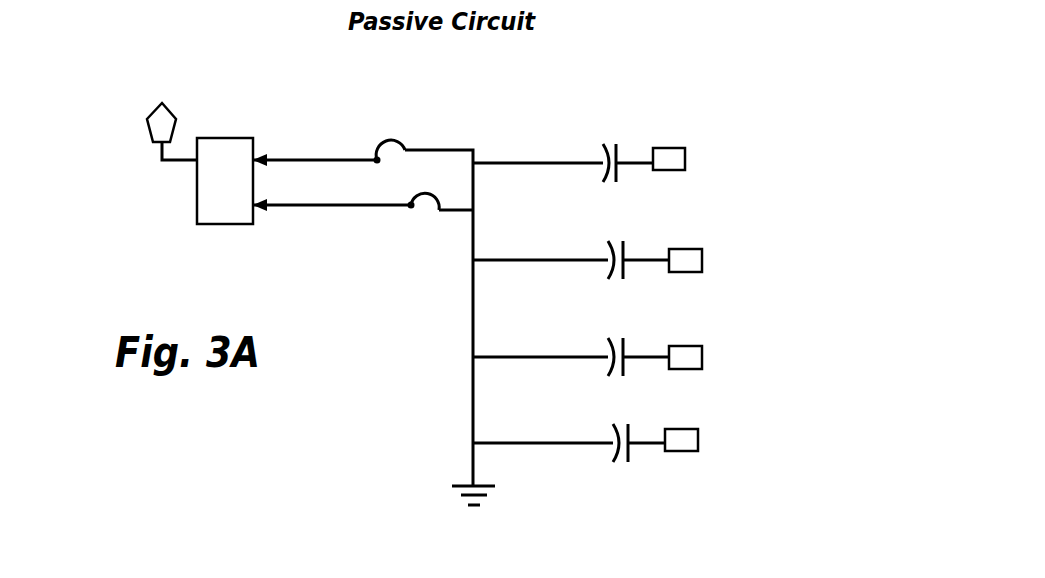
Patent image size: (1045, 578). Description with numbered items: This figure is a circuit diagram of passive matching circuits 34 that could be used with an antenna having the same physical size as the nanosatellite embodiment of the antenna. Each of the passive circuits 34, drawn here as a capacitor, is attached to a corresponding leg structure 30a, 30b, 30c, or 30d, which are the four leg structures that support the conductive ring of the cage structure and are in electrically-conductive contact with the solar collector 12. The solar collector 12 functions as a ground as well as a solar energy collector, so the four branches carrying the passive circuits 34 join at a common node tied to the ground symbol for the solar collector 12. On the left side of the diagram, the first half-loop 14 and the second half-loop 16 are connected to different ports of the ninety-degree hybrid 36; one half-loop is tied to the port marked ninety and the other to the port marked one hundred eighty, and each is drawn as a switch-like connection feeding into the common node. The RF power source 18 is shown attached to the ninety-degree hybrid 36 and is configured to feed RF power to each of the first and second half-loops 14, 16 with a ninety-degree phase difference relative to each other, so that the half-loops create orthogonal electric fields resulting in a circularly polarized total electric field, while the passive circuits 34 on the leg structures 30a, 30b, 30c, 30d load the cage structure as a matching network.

The solar collector 12 is at (452, 486).
The first half-loop 14 is at (386, 134).
The second half-loop 16 is at (428, 198).
The RF power source 18 is at (148, 110).
The leg structure 30a is at (685, 157).
The leg structure 30b is at (702, 260).
The leg structure 30c is at (702, 357).
The leg structure 30d is at (698, 440).
The passive matching circuit 34 is at (637, 106).
The ninety-degree hybrid 36 is at (243, 138).